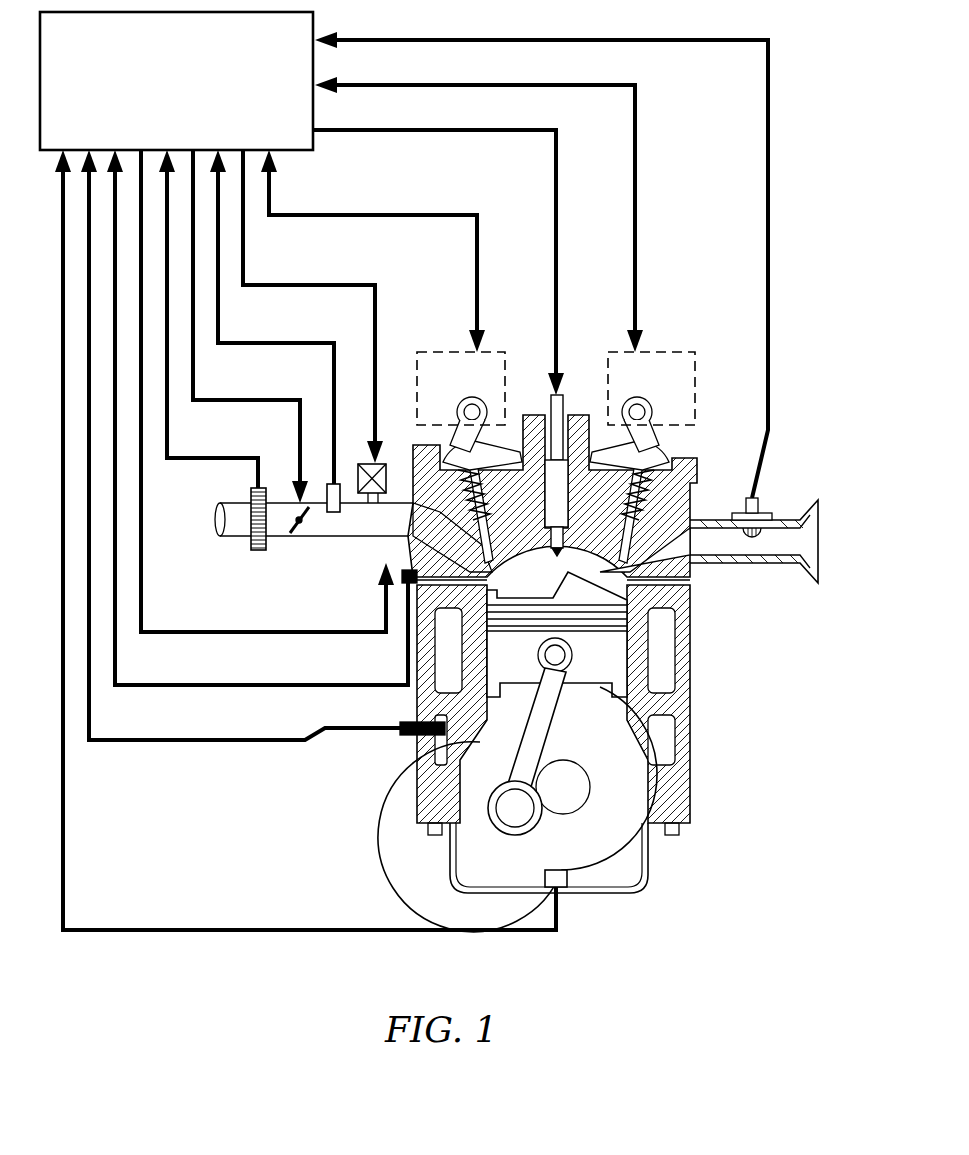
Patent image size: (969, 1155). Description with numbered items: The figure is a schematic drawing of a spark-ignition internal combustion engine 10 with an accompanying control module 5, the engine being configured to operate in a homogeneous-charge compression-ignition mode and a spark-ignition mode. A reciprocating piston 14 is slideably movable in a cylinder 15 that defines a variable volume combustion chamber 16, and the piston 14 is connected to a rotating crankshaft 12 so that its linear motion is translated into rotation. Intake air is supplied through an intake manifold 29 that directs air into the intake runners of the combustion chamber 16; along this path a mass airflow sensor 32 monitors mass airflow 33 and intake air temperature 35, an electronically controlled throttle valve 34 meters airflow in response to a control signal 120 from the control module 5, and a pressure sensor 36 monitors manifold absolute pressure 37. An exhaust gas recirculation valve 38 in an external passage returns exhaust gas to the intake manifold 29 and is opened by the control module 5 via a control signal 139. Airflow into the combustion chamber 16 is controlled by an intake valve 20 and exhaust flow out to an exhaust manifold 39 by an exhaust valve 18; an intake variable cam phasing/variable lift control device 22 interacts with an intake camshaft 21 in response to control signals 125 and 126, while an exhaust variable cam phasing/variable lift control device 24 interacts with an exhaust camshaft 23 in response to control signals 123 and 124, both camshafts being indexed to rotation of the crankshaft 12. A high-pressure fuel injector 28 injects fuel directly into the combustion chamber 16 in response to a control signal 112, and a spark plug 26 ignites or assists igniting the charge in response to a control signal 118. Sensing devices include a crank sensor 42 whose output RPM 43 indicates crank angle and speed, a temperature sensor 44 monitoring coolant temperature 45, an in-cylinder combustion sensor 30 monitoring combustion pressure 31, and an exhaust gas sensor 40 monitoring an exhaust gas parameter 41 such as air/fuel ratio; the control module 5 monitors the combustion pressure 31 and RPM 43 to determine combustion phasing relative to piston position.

The control module 5 is at (183, 92).
The internal combustion engine 10 is at (698, 707).
The crankshaft 12 is at (605, 835).
The piston 14 is at (611, 669).
The cylinder 15 is at (634, 604).
The combustion chamber 16 is at (539, 594).
The exhaust valve 18 is at (682, 559).
The intake valve 20 is at (443, 539).
The intake camshaft 21 is at (476, 410).
The intake variable cam phasing/variable lift control device 22 is at (459, 384).
The exhaust camshaft 23 is at (642, 412).
The exhaust variable cam phasing/variable lift control device 24 is at (684, 384).
The spark plug 26 is at (560, 420).
The fuel injector 28 is at (405, 538).
The intake manifold 29 is at (400, 503).
The in-cylinder combustion sensor 30 is at (400, 580).
The combustion pressure 31 is at (193, 678).
The mass airflow sensor 32 is at (251, 548).
The mass airflow 33 is at (209, 319).
The throttle valve 34 is at (298, 528).
The intake air temperature 35 is at (260, 456).
The pressure sensor 36 is at (333, 512).
The manifold absolute pressure 37 is at (336, 339).
The exhaust gas recirculation valve 38 is at (370, 495).
The exhaust manifold 39 is at (710, 520).
The exhaust gas sensor 40 is at (755, 505).
The exhaust gas parameter 41 is at (739, 34).
The crank sensor 42 is at (545, 878).
The RPM 43 is at (282, 922).
The temperature sensor 44 is at (408, 736).
The coolant temperature 45 is at (185, 739).
The control signal INJ_PW 112 is at (201, 627).
The spark control signal 118 is at (554, 126).
The throttle control signal 120 is at (302, 399).
The control signal eVLC 123 is at (479, 201).
The control signal eVCP 124 is at (640, 79).
The control signal iVLC 125 is at (373, 251).
The control signal iVCP 126 is at (470, 212).
The EGR control signal 139 is at (381, 282).